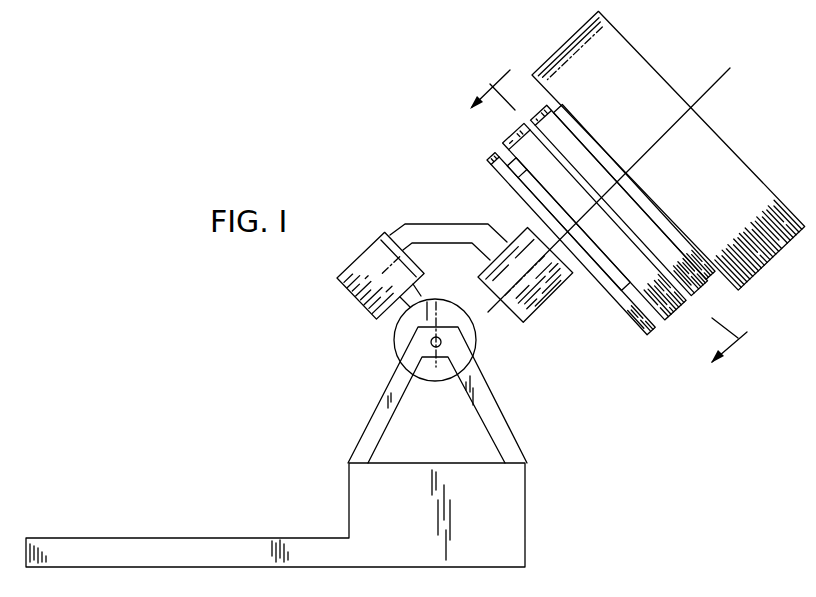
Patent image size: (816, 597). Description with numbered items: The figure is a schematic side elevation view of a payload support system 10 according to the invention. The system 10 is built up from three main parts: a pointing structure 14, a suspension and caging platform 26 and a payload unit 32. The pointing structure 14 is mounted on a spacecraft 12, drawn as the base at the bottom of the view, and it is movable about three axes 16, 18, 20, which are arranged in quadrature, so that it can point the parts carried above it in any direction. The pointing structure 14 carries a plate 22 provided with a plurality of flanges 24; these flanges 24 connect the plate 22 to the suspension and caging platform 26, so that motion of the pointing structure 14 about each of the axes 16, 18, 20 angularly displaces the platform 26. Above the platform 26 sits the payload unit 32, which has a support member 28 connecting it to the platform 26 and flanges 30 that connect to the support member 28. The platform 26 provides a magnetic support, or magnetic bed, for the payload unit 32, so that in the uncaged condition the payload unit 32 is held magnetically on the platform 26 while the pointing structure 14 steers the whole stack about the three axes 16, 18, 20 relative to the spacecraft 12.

The payload support system 10 is at (448, 45).
The spacecraft 12 is at (370, 492).
The pointing structure 14 is at (367, 306).
The axis 16 is at (441, 342).
The axis 18 is at (362, 258).
The axis 20 is at (545, 262).
The plate 22 is at (515, 203).
The flanges 24 is at (518, 173).
The suspension and caging platform 26 is at (513, 140).
The support member 28 is at (622, 188).
The flanges 30 is at (570, 122).
The payload unit 32 is at (651, 80).